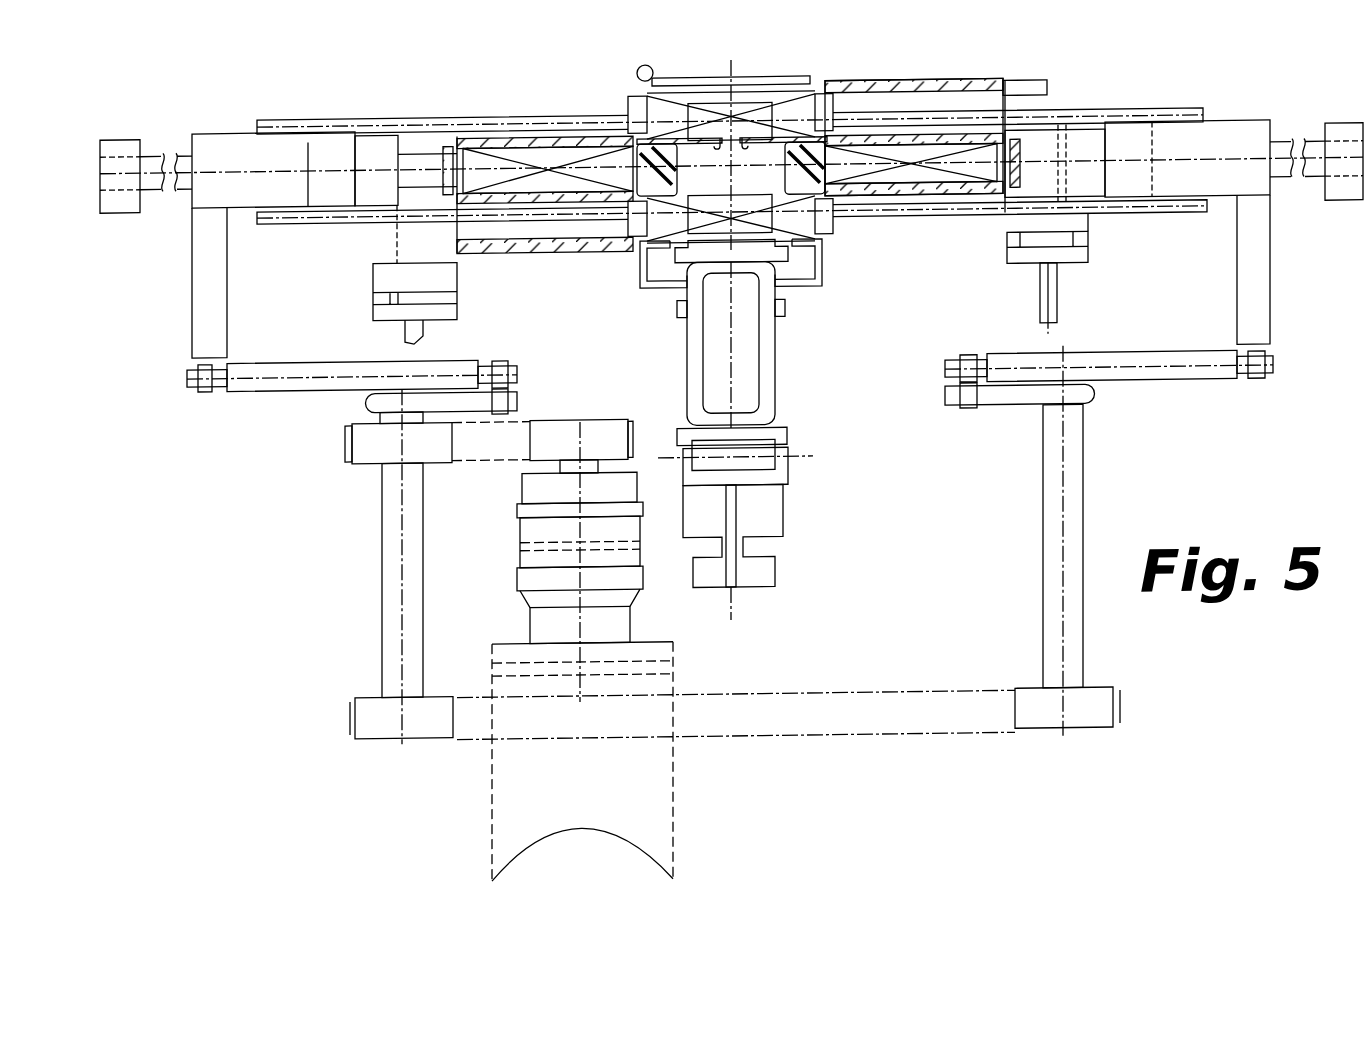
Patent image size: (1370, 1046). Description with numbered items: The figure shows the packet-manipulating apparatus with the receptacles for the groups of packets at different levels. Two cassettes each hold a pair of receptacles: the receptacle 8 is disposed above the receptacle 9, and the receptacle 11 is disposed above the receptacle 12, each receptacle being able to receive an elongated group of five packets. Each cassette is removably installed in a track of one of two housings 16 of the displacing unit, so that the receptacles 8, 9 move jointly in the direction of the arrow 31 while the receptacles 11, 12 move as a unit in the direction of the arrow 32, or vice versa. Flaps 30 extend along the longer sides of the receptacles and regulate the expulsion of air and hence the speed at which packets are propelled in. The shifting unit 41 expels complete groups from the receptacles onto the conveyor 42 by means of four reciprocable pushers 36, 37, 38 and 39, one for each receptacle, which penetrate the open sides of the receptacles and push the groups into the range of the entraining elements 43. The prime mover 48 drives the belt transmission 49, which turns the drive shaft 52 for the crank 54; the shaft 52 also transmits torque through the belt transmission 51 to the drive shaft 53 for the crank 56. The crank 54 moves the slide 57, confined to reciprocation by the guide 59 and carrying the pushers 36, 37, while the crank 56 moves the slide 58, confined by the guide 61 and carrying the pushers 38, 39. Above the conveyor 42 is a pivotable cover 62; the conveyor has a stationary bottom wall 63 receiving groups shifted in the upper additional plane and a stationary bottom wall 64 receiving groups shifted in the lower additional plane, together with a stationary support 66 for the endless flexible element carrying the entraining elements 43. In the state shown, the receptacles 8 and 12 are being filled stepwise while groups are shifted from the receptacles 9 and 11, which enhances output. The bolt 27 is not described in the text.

The receptacle 8 is at (522, 137).
The receptacle 9 is at (507, 250).
The receptacle 11 is at (957, 86).
The receptacle 12 is at (998, 190).
The housing 16 is at (373, 267).
The fastening bolt 27 is at (373, 310).
The flap 30 is at (1017, 151).
The arrow 31 is at (552, 265).
The arrow 32 is at (907, 222).
The pusher 36 is at (628, 101).
The pusher 37 is at (637, 232).
The pusher 38 is at (827, 111).
The pusher 39 is at (828, 231).
The shifting unit 41 is at (318, 463).
The conveyor 42 is at (805, 321).
The entraining element 43 is at (753, 102).
The prime mover 48 is at (520, 537).
The belt transmission 49 is at (480, 459).
The belt transmission 51 is at (857, 734).
The drive shaft 52 is at (383, 578).
The drive shaft 53 is at (1043, 552).
The crank 54 is at (520, 395).
The crank 56 is at (945, 399).
The slide 57 is at (207, 125).
The slide 58 is at (1240, 144).
The guide 59 is at (158, 182).
The guide 61 is at (1313, 178).
The pivotable cover 62 is at (443, 146).
The stationary bottom wall 63 is at (702, 143).
The stationary bottom wall 64 is at (663, 249).
The stationary support 66 is at (690, 366).